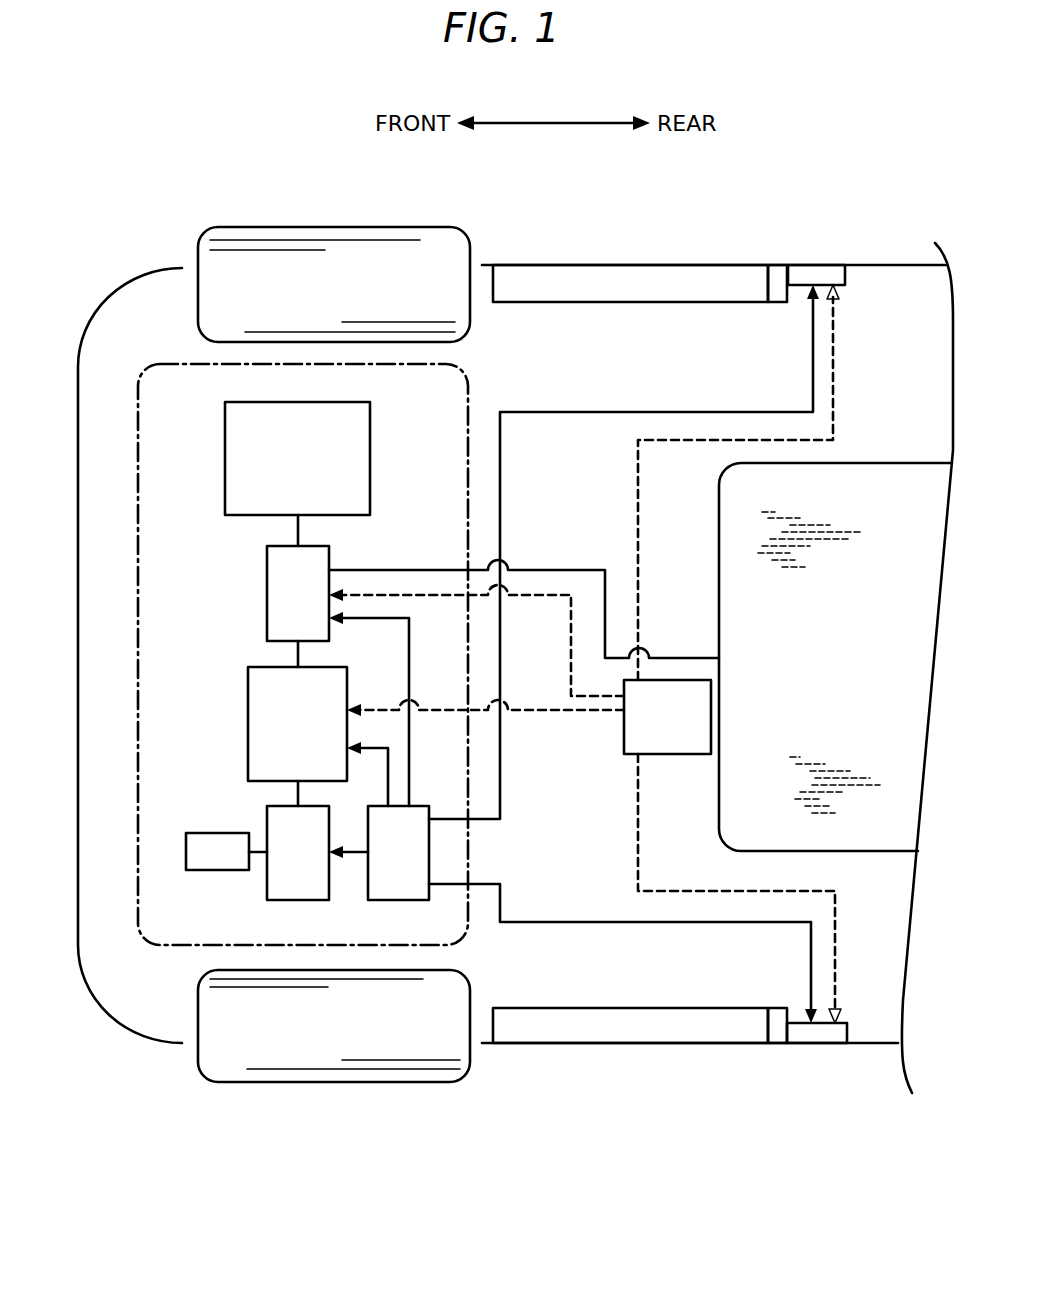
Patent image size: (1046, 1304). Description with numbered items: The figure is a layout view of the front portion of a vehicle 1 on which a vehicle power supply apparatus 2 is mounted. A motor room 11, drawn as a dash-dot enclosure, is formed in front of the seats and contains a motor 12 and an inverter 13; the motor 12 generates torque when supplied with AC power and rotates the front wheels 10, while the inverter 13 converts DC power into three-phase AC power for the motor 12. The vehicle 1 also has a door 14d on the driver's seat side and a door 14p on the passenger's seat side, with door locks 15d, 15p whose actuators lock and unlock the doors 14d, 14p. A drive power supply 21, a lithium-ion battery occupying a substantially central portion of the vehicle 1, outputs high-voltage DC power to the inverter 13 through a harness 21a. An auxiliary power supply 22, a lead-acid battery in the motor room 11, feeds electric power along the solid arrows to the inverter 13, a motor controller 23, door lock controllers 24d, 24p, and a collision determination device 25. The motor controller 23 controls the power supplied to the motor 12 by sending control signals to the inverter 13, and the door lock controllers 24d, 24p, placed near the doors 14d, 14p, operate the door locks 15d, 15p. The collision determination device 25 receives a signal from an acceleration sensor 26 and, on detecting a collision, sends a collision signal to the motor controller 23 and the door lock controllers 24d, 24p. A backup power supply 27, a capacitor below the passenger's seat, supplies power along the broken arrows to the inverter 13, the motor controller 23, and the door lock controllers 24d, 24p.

The vehicle 1 is at (80, 218).
The vehicle power supply apparatus 2 is at (878, 293).
The front wheels 10 is at (377, 227).
The motor room 11 is at (173, 363).
The motor 12 is at (225, 445).
The inverter 13 is at (267, 588).
The door on the driver's seat side 14d is at (580, 285).
The door on the passenger's seat side 14p is at (590, 1027).
The door lock 15d is at (778, 285).
The door lock 15p is at (778, 1030).
The drive power supply 21 is at (910, 463).
The harness 21a is at (568, 570).
The auxiliary power supply 22 is at (398, 900).
The motor controller 23 is at (248, 707).
The door lock controller 24d is at (820, 275).
The door lock controller 24p is at (822, 1033).
The collision determination device 25 is at (267, 888).
The acceleration sensor 26 is at (212, 833).
The backup power supply 27 is at (624, 738).